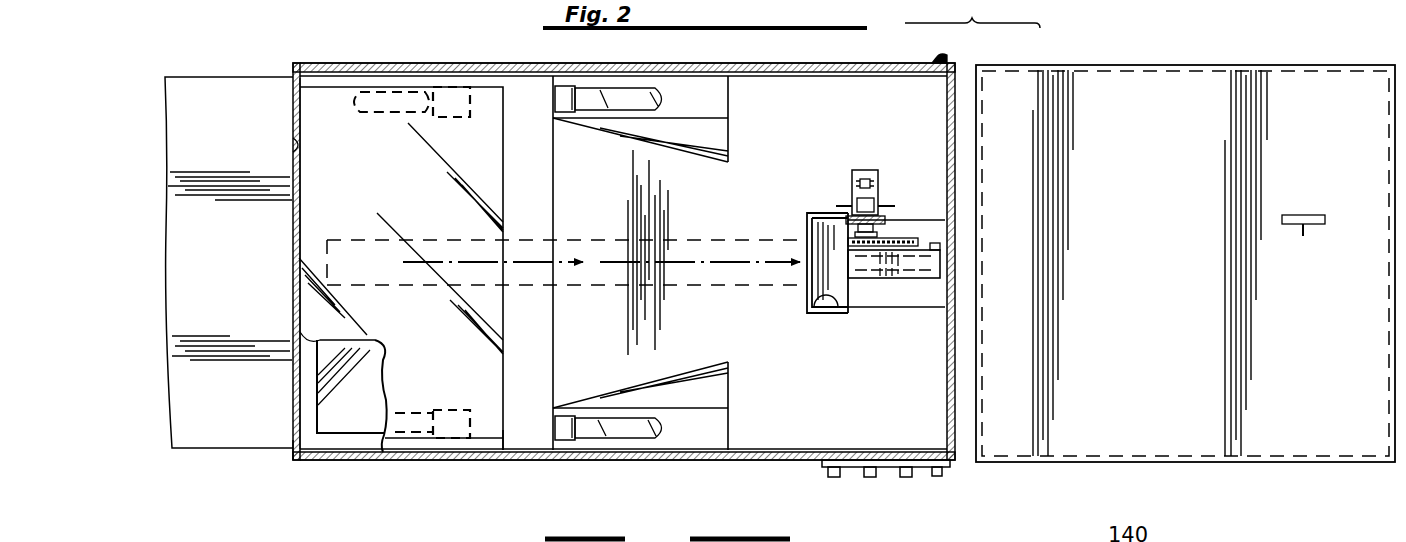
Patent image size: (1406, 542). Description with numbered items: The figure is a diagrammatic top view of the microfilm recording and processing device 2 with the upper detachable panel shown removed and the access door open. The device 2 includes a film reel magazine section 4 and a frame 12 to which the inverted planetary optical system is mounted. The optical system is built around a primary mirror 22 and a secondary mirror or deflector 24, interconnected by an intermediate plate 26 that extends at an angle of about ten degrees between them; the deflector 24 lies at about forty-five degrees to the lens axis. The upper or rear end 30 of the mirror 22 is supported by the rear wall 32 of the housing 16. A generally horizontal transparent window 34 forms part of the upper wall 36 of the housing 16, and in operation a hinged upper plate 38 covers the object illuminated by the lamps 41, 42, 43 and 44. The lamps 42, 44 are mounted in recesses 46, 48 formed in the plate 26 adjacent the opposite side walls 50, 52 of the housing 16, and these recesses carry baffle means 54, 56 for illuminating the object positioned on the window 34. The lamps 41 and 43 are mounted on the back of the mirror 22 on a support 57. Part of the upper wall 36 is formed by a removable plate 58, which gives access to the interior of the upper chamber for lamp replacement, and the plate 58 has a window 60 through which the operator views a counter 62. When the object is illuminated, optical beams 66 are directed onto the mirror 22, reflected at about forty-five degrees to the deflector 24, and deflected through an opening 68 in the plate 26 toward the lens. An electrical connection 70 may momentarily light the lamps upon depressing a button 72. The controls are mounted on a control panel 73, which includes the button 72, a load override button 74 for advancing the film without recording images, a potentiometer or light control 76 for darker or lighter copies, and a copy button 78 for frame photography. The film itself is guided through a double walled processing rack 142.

The device 2 is at (350, 60).
The film reel magazine section 4 is at (910, 282).
The frame 12 is at (493, 460).
The housing 16 is at (290, 460).
The primary mirror 22 is at (483, 117).
The secondary mirror or deflector 24 is at (807, 225).
The intermediate plate 26 is at (732, 336).
The upper or rear end of mirror 30 is at (287, 103).
The rear wall 32 is at (287, 137).
The transparent window 34 is at (362, 410).
The upper wall 36 is at (313, 442).
The hinged upper plate 38 is at (172, 137).
The lamp 41 is at (388, 100).
The lamp 42 is at (610, 100).
The lamp 43 is at (405, 432).
The lamp 44 is at (615, 428).
The recess 46 is at (730, 103).
The recess 48 is at (728, 426).
The side wall 50 is at (755, 460).
The side wall 52 is at (850, 64).
The baffle means 54 is at (730, 131).
The baffle means 56 is at (730, 390).
The support 57 is at (497, 445).
The removable plate 58 is at (1150, 272).
The window 60 is at (1305, 237).
The counter 62 is at (890, 145).
The optical beams 66 is at (615, 262).
The opening 68 is at (810, 307).
The electrical connection 70 is at (945, 56).
The button 72 is at (907, 480).
The control panel 73 is at (820, 462).
The load override button 74 is at (873, 480).
The potentiometer or light control 76 is at (835, 480).
The copy button 78 is at (938, 476).
The processing rack 142 is at (616, 288).